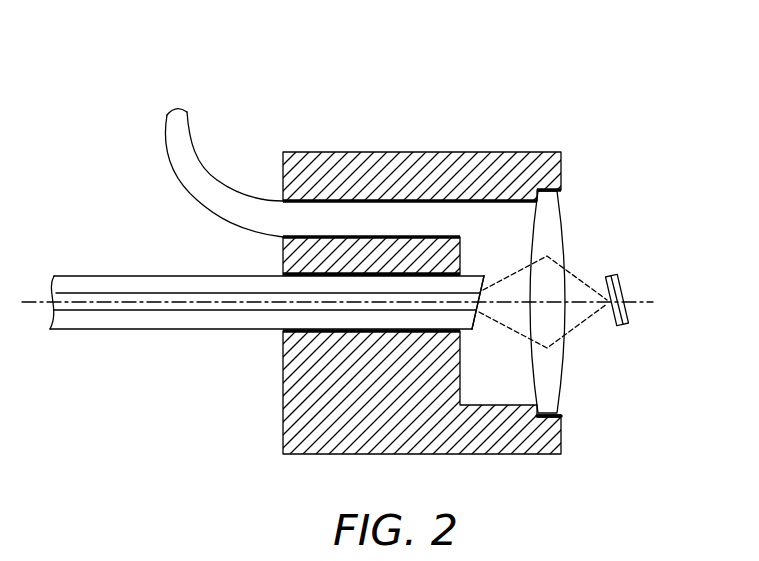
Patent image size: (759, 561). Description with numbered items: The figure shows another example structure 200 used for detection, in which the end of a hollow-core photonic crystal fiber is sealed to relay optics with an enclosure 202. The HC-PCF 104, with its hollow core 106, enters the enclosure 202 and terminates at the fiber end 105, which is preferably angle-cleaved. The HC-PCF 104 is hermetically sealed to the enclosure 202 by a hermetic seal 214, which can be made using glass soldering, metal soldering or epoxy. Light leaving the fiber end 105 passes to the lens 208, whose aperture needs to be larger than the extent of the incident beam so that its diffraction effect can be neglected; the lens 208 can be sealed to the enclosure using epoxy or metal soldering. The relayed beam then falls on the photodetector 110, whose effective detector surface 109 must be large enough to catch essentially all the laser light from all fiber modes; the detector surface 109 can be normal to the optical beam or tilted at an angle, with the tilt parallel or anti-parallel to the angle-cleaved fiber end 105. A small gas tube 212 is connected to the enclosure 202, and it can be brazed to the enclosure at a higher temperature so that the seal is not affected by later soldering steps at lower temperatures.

The detection structure 200 is at (572, 82).
The enclosure 202 is at (462, 150).
The HC-PCF 104 is at (97, 273).
The fiber end 105 is at (486, 284).
The hollow core 106 is at (212, 302).
The lens 208 is at (552, 227).
The photodetector 110 is at (625, 288).
The detector surface 109 is at (608, 320).
The gas tube 212 is at (197, 162).
The hermetic seal 214 is at (420, 332).